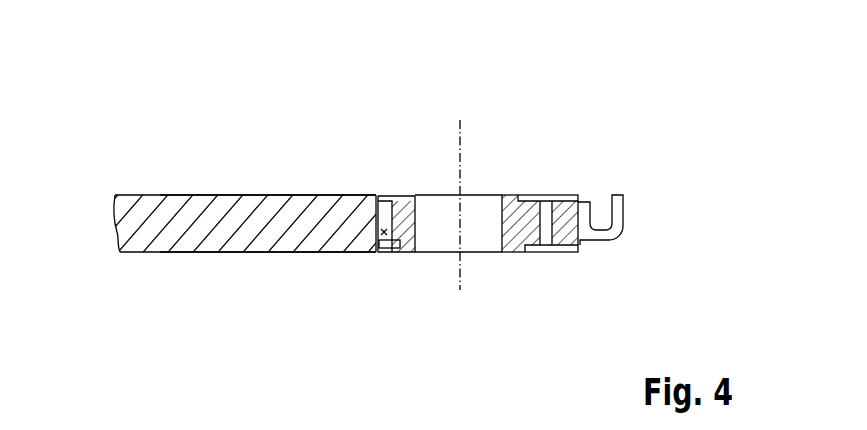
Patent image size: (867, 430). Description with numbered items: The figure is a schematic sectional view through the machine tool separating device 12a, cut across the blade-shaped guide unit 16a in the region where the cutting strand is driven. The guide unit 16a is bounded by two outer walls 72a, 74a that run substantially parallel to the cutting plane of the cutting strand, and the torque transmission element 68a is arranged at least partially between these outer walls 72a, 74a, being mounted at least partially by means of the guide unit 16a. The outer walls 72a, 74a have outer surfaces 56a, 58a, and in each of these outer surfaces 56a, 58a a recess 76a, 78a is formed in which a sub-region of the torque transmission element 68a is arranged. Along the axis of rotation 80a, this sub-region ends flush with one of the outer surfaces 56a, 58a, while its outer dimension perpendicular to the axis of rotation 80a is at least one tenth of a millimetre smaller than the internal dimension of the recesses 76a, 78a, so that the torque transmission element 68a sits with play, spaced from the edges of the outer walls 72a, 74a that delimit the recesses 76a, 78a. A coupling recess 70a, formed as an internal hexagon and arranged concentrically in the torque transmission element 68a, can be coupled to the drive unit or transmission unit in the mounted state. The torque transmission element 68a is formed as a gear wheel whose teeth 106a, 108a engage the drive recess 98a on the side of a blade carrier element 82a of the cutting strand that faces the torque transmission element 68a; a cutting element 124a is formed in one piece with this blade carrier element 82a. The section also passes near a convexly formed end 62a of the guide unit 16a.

The machine tool separating device 12a is at (612, 124).
The guide unit 16a is at (136, 253).
The outer surface 56a is at (264, 195).
The outer surface 58a is at (263, 253).
The convexly formed end 62a is at (619, 273).
The torque transmission element 68a is at (406, 252).
The coupling recess 70a is at (470, 232).
The outer wall 72a is at (206, 195).
The outer wall 74a is at (217, 253).
The recess 76a is at (397, 196).
The recess 78a is at (399, 252).
The axis of rotation 80a is at (460, 135).
The blade carrier element 82a is at (574, 240).
The drive recess 98a is at (546, 210).
The tooth 106a is at (383, 237).
The tooth 108a is at (517, 232).
The cutting element 124a is at (623, 223).